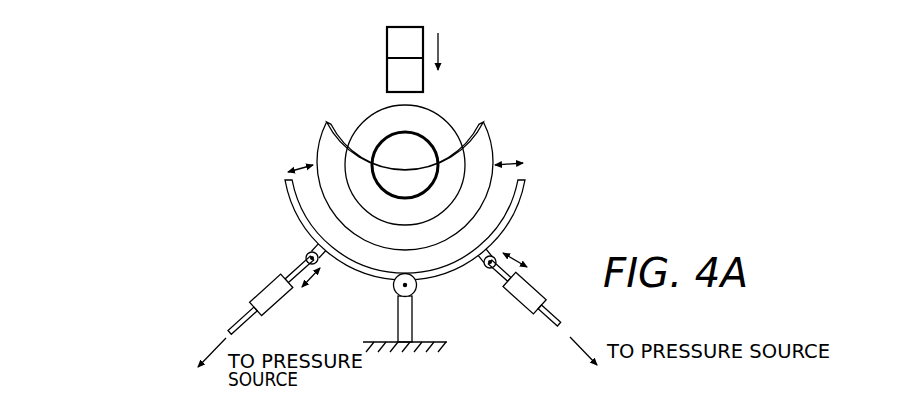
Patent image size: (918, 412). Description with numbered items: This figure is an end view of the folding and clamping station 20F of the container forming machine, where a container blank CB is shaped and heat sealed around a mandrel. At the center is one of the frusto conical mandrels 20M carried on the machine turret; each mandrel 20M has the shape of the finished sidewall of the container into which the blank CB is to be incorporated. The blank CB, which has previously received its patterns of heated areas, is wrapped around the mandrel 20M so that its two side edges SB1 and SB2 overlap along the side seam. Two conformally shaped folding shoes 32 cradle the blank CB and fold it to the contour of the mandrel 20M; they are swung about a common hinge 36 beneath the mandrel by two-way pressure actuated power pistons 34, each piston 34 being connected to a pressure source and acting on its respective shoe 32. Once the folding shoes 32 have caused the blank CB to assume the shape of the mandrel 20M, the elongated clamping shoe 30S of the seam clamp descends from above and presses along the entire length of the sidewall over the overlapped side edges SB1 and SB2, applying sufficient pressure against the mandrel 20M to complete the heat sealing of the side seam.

The clamping shoe 30S is at (394, 47).
The mandrel 20M is at (433, 130).
The folding and clamping station 20F is at (270, 183).
The container blank CB is at (488, 197).
The side edge SB1 is at (328, 120).
The side edge SB2 is at (491, 125).
The folding shoe 32 is at (293, 220).
The power piston 34 is at (260, 290).
The common hinge 36 is at (392, 290).